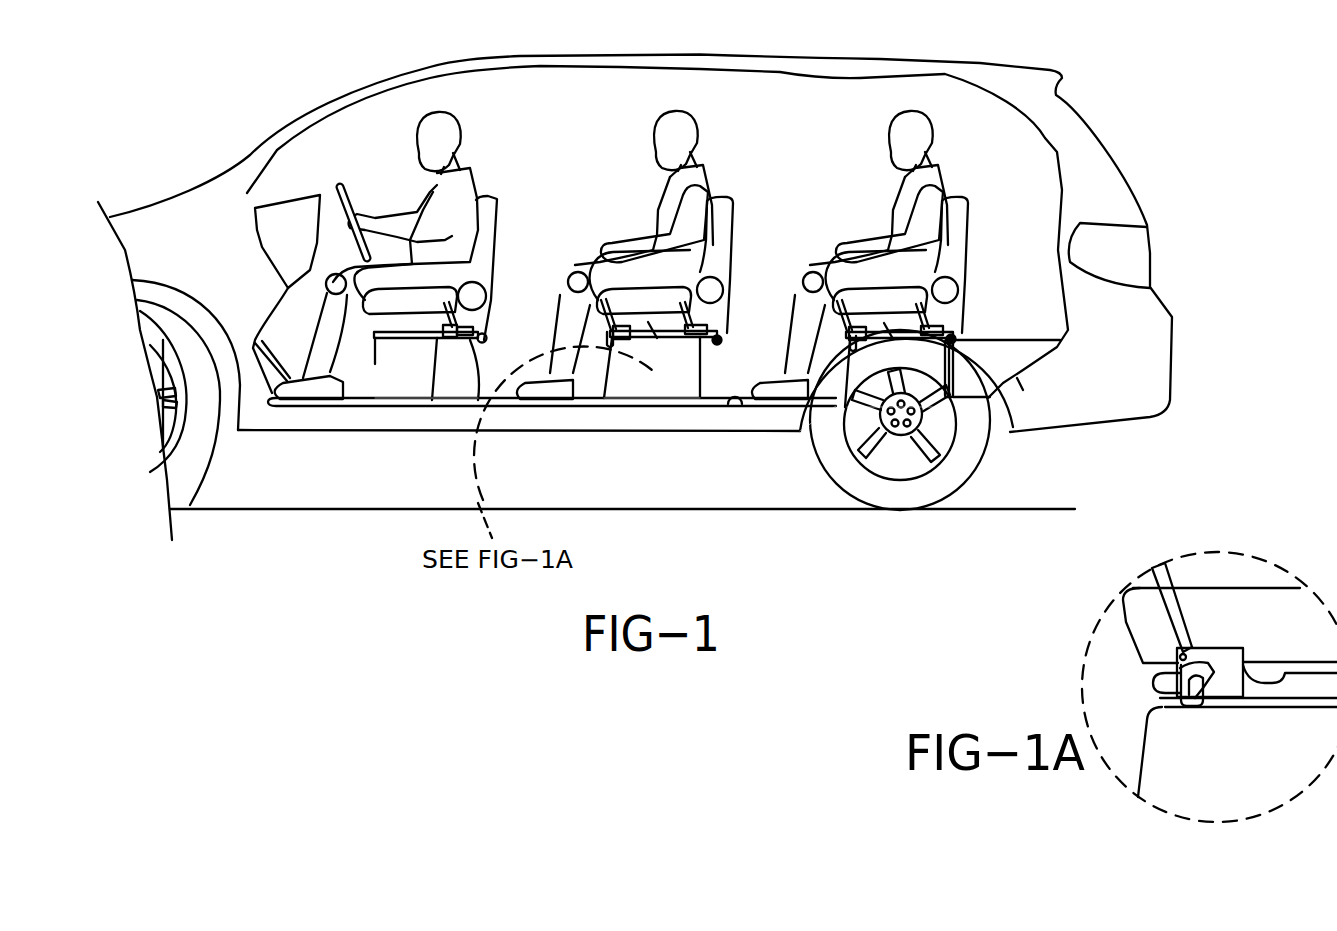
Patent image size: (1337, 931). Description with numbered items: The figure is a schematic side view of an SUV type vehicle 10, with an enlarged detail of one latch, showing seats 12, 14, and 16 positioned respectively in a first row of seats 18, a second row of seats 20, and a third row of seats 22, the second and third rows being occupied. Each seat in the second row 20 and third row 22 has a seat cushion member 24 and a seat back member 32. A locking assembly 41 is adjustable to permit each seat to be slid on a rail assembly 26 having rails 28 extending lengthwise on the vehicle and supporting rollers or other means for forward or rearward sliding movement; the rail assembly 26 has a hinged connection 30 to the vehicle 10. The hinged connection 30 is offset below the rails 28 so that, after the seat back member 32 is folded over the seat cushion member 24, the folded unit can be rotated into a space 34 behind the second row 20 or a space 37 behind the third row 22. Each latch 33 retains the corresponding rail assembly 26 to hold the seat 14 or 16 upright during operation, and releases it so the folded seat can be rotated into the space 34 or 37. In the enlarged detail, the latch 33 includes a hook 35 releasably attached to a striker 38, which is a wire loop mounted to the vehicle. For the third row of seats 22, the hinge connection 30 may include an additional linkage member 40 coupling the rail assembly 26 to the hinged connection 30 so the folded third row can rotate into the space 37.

In FIG. 1, the vehicle 10 is at (688, 55).
In FIG. 1, the seat 12 is at (494, 204).
In FIG. 1, the seat 14 is at (733, 202).
In FIG. 1, the seat 16 is at (967, 203).
In FIG. 1, the first row of seats 18 is at (428, 340).
In FIG. 1, the second row of seats 20 is at (652, 327).
In FIG. 1, the third row of seats 22 is at (850, 462).
In FIG. 1, the seat cushion member 24 is at (370, 313).
In FIG. 1, the rail assembly 26 is at (400, 340).
In FIG. 1, the rails 28 is at (720, 338).
In FIG. 1, the hinged connection 30 is at (688, 335).
In FIG. 1, the seat back member 32 is at (489, 231).
In FIG. 1, the latch 33 is at (590, 325).
In FIG. 1A, the latch 33 is at (1205, 622).
In FIG. 1, the space 34 is at (736, 405).
In FIG. 1A, the hook 35 is at (1238, 680).
In FIG. 1, the space 37 is at (999, 256).
In FIG. 1, the striker 38 is at (608, 332).
In FIG. 1A, the striker 38 is at (1183, 690).
In FIG. 1, the linkage member 40 is at (987, 447).
In FIG. 1, the locking assembly 41 is at (449, 338).